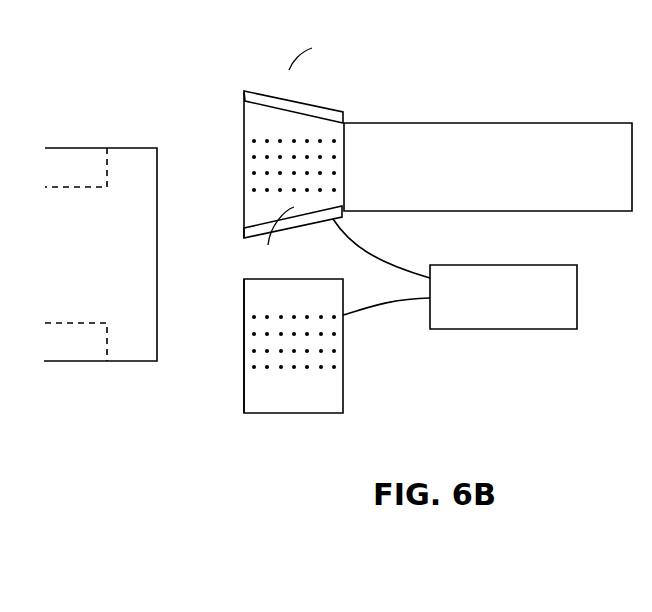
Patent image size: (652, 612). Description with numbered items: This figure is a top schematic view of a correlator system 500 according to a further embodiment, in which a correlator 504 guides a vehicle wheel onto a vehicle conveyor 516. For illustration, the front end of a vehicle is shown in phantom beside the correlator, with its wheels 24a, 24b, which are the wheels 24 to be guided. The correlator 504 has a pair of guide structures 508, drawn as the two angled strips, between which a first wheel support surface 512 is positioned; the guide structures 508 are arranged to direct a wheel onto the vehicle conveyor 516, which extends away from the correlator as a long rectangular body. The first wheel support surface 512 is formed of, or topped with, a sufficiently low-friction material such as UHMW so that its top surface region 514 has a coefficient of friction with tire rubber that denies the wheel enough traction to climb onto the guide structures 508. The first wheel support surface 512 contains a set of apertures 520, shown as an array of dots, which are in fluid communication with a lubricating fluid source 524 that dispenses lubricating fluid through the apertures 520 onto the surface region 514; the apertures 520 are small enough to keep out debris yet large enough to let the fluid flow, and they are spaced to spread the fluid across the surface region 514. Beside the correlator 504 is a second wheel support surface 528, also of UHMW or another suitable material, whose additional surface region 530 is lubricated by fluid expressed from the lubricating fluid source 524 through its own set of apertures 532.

The wheel 24 is at (97, 255).
The wheel 24a is at (82, 165).
The wheel 24b is at (85, 353).
The correlator system 500 is at (271, 144).
The correlator 504 is at (324, 54).
The guide structures 508 is at (247, 100).
The first wheel support surface 512 is at (244, 137).
The surface region 514 is at (283, 237).
The vehicle conveyor 516 is at (465, 122).
The apertures 520 is at (317, 102).
The lubricating fluid source 524 is at (519, 308).
The second wheel support surface 528 is at (244, 352).
The additional surface region 530 is at (257, 370).
The apertures 532 is at (239, 380).